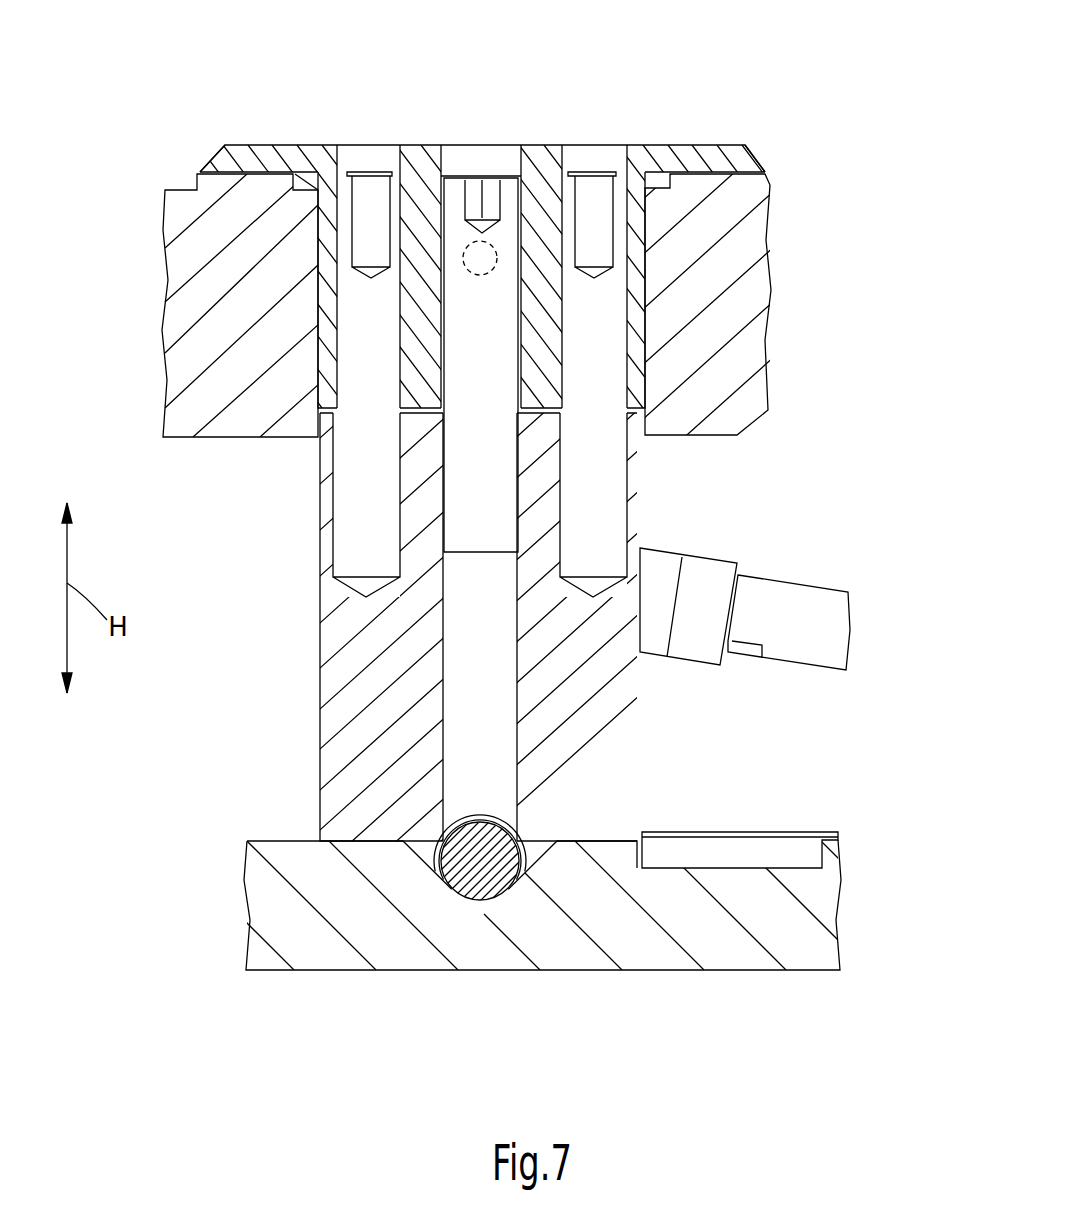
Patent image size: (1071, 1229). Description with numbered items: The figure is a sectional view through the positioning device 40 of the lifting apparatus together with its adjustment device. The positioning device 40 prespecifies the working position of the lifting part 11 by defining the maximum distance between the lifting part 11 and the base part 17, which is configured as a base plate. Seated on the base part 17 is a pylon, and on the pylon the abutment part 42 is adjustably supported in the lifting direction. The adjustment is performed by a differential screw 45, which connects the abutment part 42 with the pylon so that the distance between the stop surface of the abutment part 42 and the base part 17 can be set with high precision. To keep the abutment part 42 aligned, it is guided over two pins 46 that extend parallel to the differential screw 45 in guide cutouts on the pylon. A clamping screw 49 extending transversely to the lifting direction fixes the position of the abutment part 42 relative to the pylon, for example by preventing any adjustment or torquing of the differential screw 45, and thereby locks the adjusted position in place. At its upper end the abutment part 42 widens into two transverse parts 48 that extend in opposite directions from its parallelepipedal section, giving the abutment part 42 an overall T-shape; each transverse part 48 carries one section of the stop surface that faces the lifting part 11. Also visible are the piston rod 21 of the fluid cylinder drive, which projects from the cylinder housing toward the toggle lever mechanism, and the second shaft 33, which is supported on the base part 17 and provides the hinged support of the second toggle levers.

The lifting part 11 is at (735, 410).
The base part 17 is at (630, 943).
The piston rod 21 is at (795, 607).
The second shaft 33 is at (480, 868).
The positioning device 40 is at (572, 117).
The abutment part 42 is at (425, 170).
The differential screw 45 is at (485, 465).
The pin 46 is at (370, 502).
The transverse part 48 is at (238, 165).
The clamping screw 49 is at (478, 275).